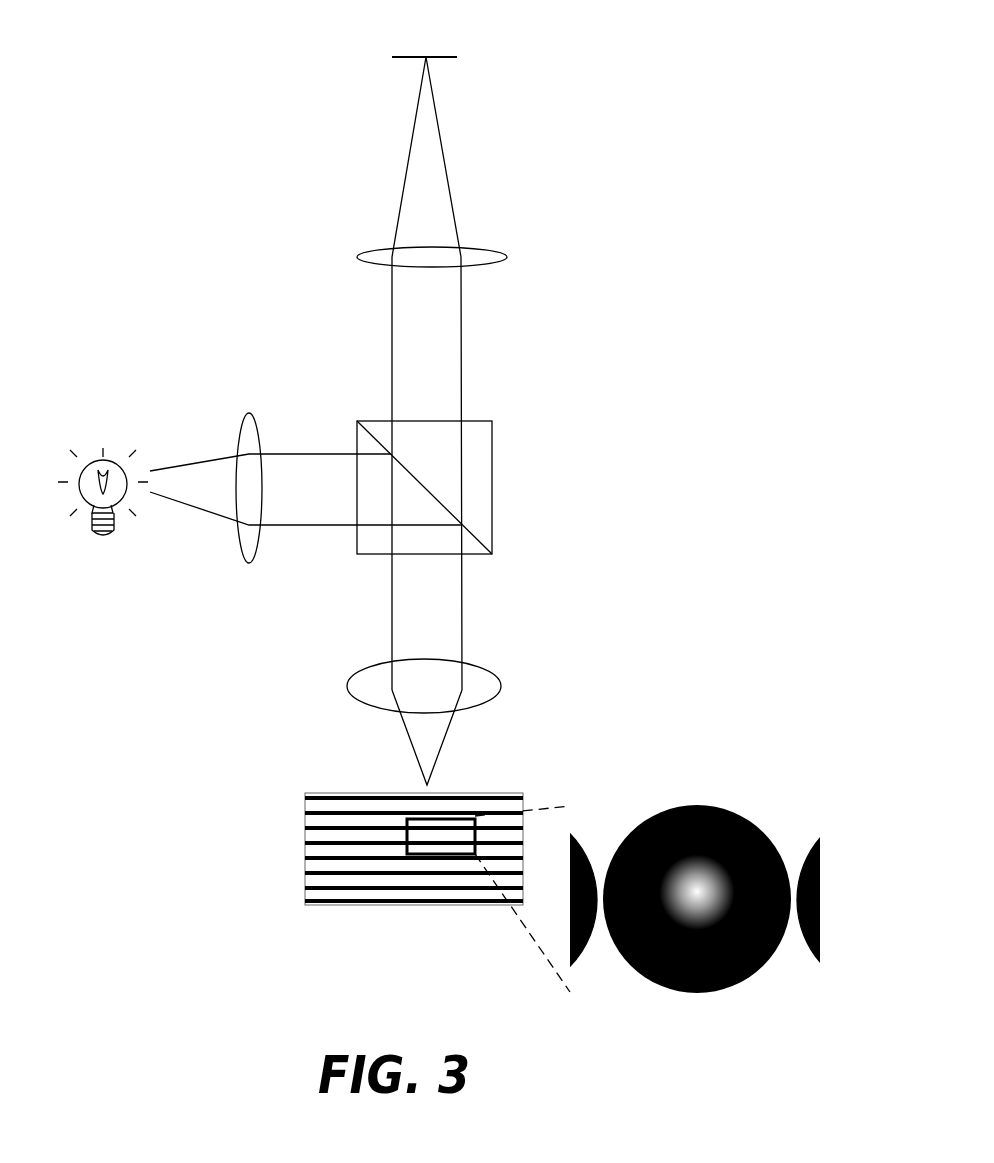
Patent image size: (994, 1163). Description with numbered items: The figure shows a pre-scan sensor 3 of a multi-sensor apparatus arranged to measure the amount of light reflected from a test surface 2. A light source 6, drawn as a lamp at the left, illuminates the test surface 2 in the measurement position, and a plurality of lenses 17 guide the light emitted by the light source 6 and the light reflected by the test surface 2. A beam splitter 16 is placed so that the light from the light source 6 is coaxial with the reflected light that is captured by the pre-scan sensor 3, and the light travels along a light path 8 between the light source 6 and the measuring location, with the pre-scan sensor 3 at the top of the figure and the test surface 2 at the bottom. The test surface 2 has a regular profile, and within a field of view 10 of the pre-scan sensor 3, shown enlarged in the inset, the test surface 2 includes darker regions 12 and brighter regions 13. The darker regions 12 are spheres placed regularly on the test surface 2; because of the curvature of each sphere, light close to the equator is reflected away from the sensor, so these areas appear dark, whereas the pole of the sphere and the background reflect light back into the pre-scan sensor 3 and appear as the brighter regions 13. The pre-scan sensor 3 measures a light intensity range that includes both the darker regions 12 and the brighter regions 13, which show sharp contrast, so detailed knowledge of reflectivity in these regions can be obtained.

The test surface 2 is at (280, 845).
The pre-scan sensor 3 is at (462, 33).
The light source 6 is at (85, 575).
The light path 8 is at (486, 336).
The field of view 10 is at (463, 830).
The darker regions 12 is at (665, 970).
The brighter regions 13 is at (697, 900).
The beam splitter 16 is at (518, 476).
The lenses 17 is at (540, 248).